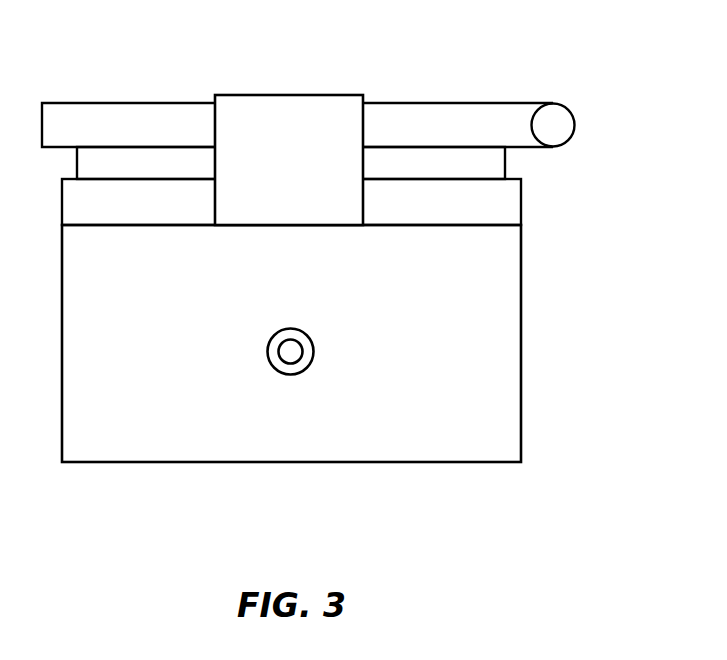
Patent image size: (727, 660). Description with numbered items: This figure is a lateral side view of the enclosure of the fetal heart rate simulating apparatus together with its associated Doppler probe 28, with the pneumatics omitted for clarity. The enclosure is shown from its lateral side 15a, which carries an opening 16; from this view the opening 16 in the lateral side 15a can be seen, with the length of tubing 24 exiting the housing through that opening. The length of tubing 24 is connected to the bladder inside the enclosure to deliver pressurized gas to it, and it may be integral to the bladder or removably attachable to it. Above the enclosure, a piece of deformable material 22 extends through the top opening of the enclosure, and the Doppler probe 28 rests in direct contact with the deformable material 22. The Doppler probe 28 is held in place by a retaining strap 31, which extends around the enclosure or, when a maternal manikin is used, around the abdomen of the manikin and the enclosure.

The lateral side 15a is at (524, 351).
The deformable material 22 is at (462, 162).
The Doppler probe 28 is at (417, 122).
The retaining strap 31 is at (287, 125).
The opening 16 is at (305, 363).
The length of tubing 24 is at (290, 349).